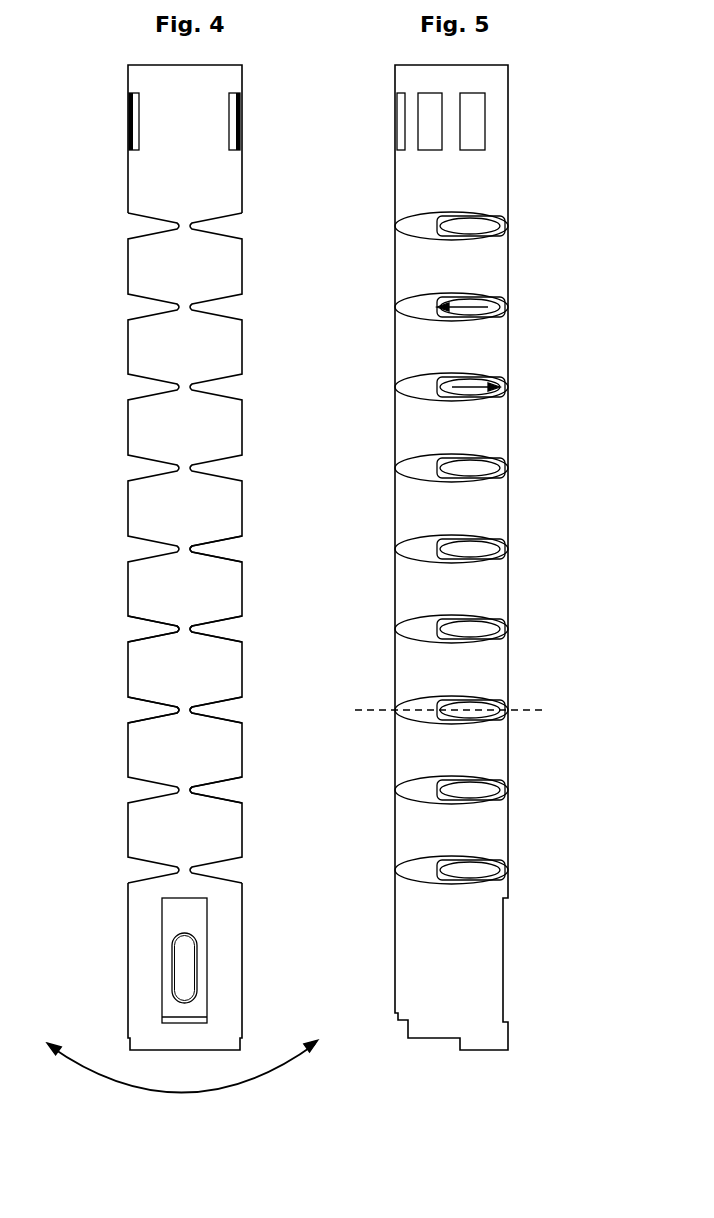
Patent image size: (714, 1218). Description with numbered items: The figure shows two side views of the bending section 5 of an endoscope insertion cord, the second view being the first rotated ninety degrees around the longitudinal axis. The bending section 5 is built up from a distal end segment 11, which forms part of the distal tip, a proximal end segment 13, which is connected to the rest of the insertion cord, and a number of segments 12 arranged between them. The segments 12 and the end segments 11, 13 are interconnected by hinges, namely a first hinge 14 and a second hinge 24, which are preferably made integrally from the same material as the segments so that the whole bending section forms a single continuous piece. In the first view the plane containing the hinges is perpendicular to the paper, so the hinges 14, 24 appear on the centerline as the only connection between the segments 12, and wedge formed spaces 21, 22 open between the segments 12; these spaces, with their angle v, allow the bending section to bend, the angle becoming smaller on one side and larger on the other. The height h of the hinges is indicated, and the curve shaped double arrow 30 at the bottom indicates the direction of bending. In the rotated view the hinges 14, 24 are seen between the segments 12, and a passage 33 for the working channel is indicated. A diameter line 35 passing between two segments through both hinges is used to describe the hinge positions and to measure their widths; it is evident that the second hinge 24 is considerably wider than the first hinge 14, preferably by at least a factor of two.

In FIG. 5, the bending section 5 is at (477, 557).
In FIG. 4, the distal end segment 11 is at (242, 923).
In FIG. 5, the distal end segment 11 is at (502, 953).
In FIG. 4, the segments 12 is at (242, 337).
In FIG. 5, the segments 12 is at (508, 270).
In FIG. 4, the proximal end segment 13 is at (242, 207).
In FIG. 4, the first hinge 14 is at (204, 631).
In FIG. 5, the first hinge 14 is at (505, 226).
In FIG. 4, the wedge formed space 21 is at (226, 710).
In FIG. 4, the wedge formed space 22 is at (140, 712).
In FIG. 4, the second hinge 24 is at (183, 628).
In FIG. 5, the second hinge 24 is at (415, 227).
In FIG. 4, the curve shaped double arrow 30 is at (270, 1078).
In FIG. 5, the passage for the working channel 33 is at (478, 228).
In FIG. 5, the diameter line 35 is at (547, 712).